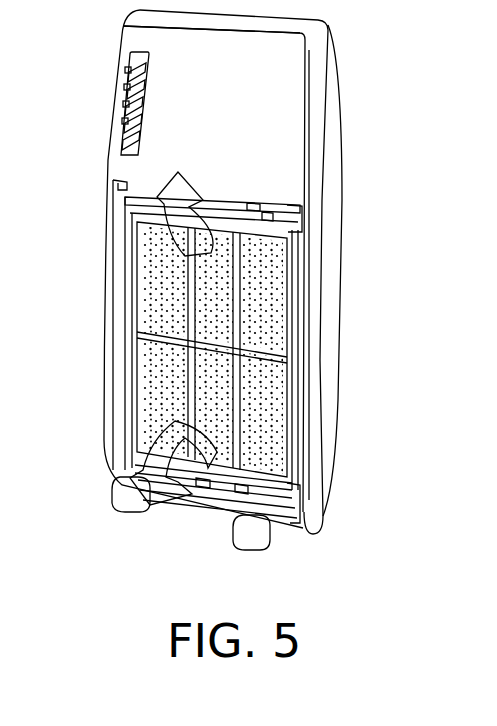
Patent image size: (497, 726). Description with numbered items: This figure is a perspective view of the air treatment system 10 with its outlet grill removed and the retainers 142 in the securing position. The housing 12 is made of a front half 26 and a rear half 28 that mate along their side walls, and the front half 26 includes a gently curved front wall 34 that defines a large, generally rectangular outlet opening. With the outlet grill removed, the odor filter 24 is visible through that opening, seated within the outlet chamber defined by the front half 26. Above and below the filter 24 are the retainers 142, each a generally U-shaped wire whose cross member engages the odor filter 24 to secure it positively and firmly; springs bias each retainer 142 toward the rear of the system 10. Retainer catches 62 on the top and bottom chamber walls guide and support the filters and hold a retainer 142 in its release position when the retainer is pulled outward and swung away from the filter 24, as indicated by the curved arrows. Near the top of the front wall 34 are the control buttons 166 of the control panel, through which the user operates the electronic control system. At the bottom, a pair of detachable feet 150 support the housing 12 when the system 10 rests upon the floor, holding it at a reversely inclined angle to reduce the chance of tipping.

The air treatment system 10 is at (382, 119).
The housing 12 is at (340, 248).
The odor filter 24 is at (290, 395).
The front half 26 is at (107, 225).
The rear half 28 is at (340, 340).
The front wall 34 is at (283, 137).
The retainer catch 62 is at (263, 213).
The retainer 142 is at (290, 217).
The foot 150 is at (132, 512).
The control button 166 is at (140, 72).